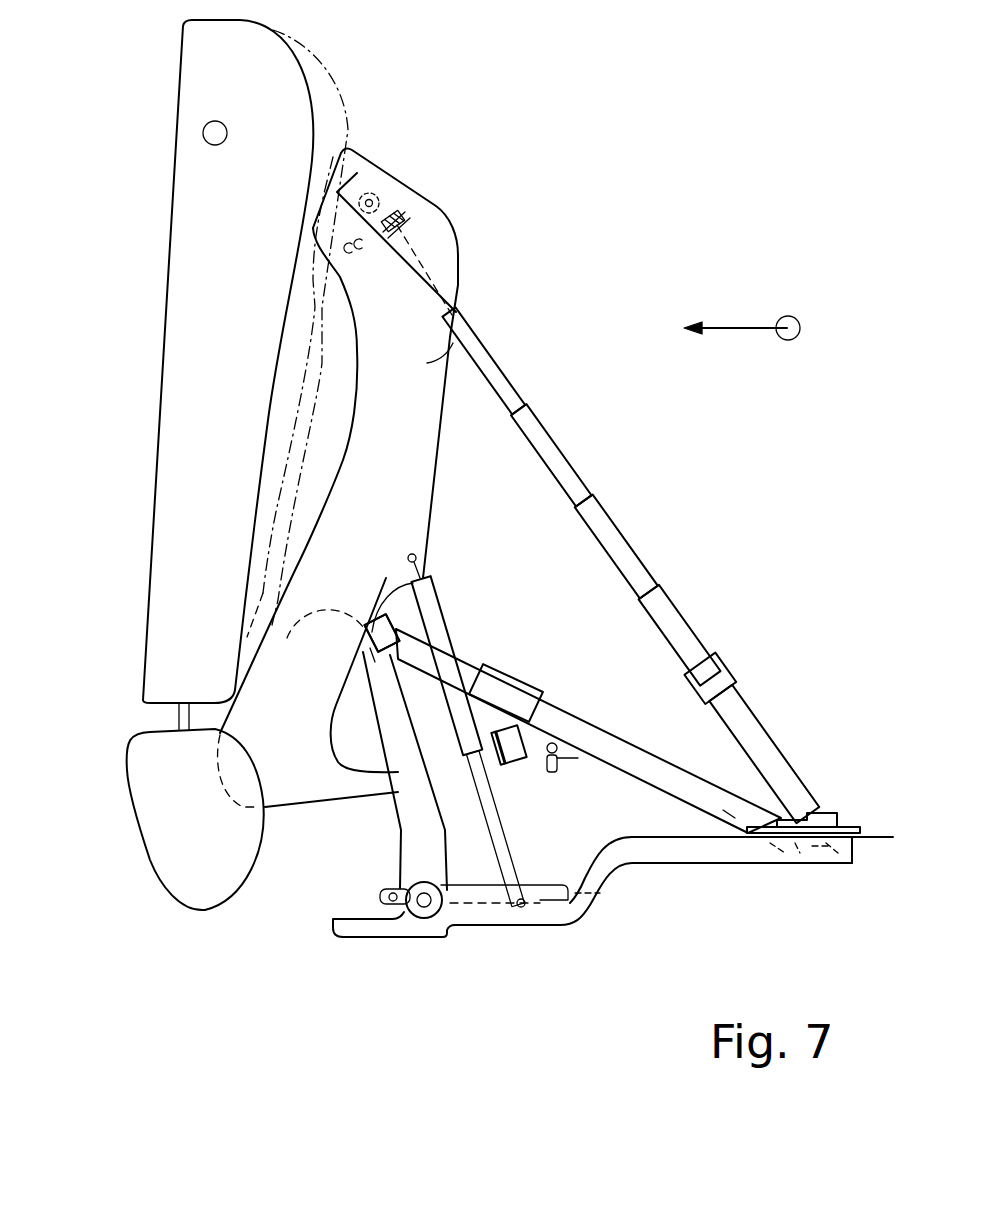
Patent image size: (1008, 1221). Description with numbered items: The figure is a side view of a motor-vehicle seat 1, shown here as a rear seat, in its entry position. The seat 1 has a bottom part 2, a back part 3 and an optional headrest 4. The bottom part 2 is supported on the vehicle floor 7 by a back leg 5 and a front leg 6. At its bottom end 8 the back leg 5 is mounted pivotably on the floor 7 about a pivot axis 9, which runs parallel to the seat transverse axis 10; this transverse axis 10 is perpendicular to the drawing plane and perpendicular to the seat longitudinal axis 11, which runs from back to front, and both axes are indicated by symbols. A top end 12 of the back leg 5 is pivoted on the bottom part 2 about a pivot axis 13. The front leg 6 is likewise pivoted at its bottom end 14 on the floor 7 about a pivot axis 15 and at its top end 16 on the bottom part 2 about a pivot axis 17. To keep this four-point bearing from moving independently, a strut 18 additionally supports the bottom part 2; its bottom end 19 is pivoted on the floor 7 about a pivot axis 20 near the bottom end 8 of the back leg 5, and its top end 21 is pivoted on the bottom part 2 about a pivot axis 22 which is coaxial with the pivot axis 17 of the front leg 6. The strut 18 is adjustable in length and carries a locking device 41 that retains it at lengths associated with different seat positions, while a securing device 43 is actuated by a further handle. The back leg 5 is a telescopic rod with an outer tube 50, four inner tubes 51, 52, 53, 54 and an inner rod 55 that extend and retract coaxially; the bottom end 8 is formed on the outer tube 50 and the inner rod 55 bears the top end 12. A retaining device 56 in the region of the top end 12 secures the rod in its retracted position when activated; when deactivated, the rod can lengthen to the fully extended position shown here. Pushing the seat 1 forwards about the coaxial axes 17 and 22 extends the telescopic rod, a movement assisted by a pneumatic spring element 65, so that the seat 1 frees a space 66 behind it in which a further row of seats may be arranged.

The seat 1 is at (656, 215).
The bottom part 2 is at (470, 318).
The back part 3 is at (192, 222).
The headrest 4 is at (153, 817).
The back leg 5 is at (653, 563).
The front leg 6 is at (397, 733).
The floor 7 is at (670, 850).
The bottom end 8 is at (817, 800).
The pivot axis 9 is at (853, 873).
The seat transverse axis 10 is at (790, 318).
The seat longitudinal axis 11 is at (737, 327).
The top end 12 is at (391, 207).
The pivot axis 13 is at (375, 192).
The bottom end 14 is at (417, 865).
The pivot axis 15 is at (422, 918).
The top end 16 is at (380, 665).
The pivot axis 17 is at (368, 634).
The pivot axis 22 is at (381, 633).
The strut 18 is at (538, 665).
The bottom end 19 is at (721, 808).
The pivot axis 20 is at (793, 855).
The top end 21 is at (390, 607).
The locking device 41 is at (497, 655).
The securing device 43 is at (528, 778).
The outer tube 50 is at (753, 739).
The inner tube 51 is at (680, 635).
The inner tube 52 is at (616, 546).
The inner tube 53 is at (551, 455).
The inner tube 54 is at (483, 360).
The inner rod 55 is at (418, 200).
The retaining device 56 is at (375, 262).
The pneumatic spring element 65 is at (437, 600).
The space 66 is at (838, 446).